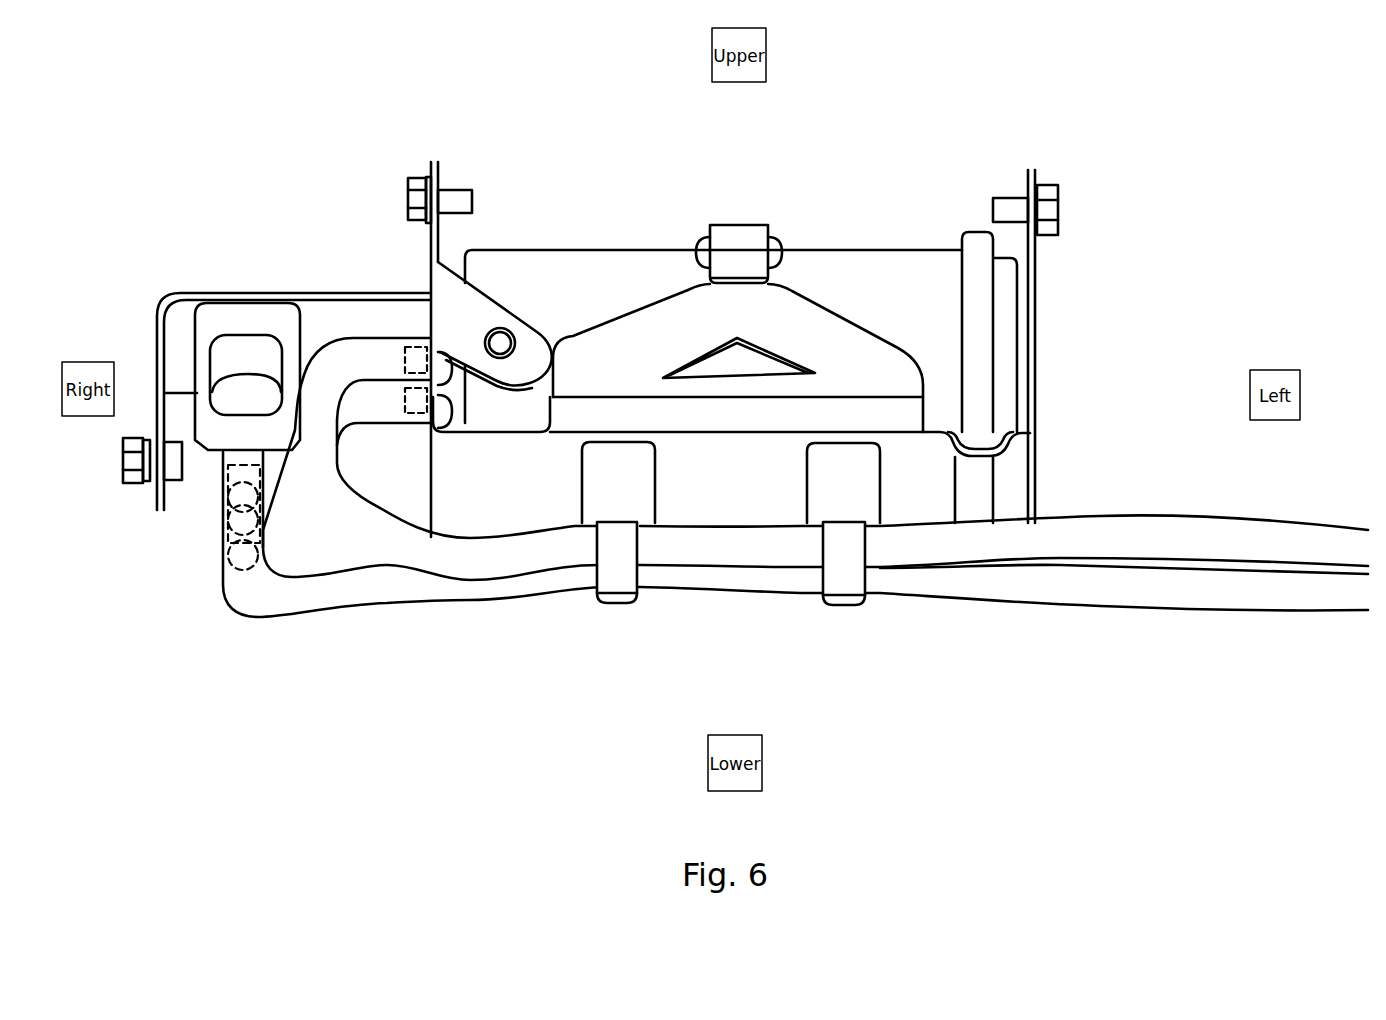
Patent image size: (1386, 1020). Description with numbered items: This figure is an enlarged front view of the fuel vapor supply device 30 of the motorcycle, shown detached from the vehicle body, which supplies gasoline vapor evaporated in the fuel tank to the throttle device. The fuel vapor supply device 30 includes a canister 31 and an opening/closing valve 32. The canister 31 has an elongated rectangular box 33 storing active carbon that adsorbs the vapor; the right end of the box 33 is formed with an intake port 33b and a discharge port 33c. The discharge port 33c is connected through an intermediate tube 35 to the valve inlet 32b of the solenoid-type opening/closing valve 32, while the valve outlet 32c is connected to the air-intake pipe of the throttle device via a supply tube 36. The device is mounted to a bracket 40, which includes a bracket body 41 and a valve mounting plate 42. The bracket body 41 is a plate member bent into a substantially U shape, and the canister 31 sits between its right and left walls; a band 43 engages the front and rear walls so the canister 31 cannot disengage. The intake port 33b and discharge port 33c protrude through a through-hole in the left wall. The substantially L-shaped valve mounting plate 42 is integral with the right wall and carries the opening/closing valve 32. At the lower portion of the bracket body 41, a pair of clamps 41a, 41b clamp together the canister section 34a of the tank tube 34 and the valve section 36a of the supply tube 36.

The fuel vapor supply device 30 is at (1000, 143).
The canister 31 is at (922, 210).
The opening/closing valve 32 is at (201, 422).
The valve inlet 32b is at (213, 472).
The valve outlet 32c is at (227, 543).
The box 33 is at (705, 339).
The intake port 33b is at (433, 427).
The discharge port 33c is at (440, 357).
The tank tube 34 is at (815, 405).
The canister section 34a is at (1105, 528).
The intermediate tube 35 is at (356, 350).
The supply tube 36 is at (795, 566).
The valve section 36a is at (1037, 598).
The bracket 40 is at (416, 146).
The bracket body 41 is at (738, 419).
The clamp 41a is at (617, 604).
The clamp 41b is at (845, 606).
The valve mounting plate 42 is at (320, 317).
The band 43 is at (741, 236).